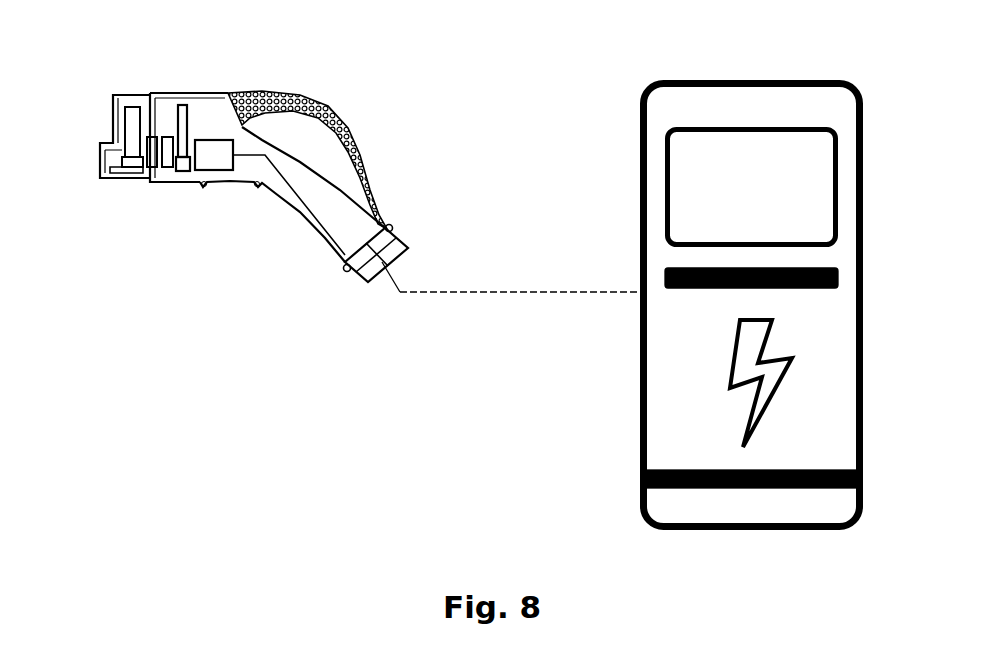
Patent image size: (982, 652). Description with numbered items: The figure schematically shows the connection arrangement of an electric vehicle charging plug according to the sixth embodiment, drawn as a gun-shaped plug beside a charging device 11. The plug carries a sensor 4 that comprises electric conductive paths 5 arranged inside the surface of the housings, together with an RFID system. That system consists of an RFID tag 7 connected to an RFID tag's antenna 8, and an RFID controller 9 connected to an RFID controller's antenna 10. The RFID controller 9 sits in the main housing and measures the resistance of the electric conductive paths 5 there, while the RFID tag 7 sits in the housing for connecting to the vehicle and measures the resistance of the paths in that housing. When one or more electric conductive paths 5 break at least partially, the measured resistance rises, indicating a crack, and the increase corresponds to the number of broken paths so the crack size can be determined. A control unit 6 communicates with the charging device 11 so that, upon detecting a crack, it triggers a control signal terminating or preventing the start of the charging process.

The sensor 4 is at (116, 65).
The electric conductive paths 5 is at (187, 105).
The control unit 6 is at (215, 172).
The RFID tag 7 is at (125, 172).
The RFID tag's antenna 8 is at (153, 167).
The RFID controller 9 is at (182, 172).
The RFID controller's antenna 10 is at (167, 137).
The charging device 11 is at (857, 90).